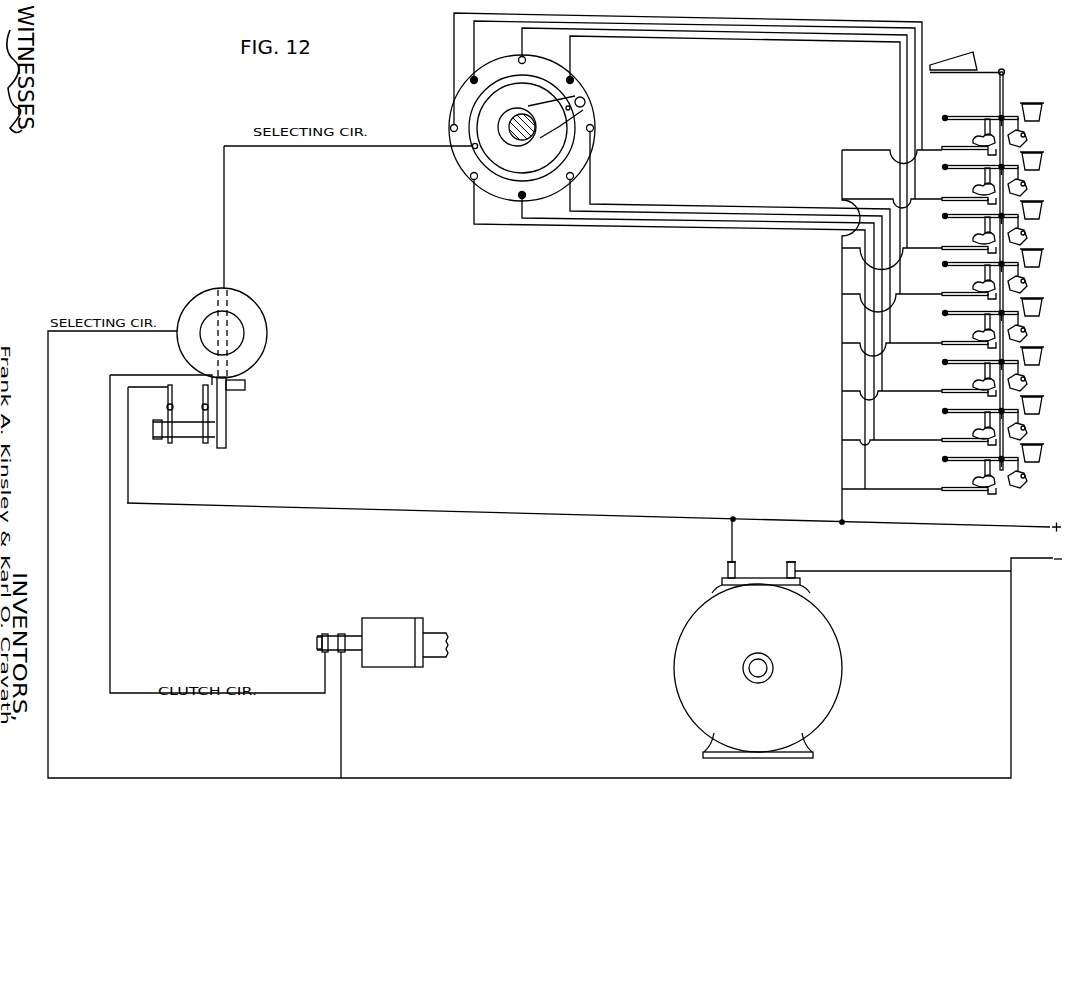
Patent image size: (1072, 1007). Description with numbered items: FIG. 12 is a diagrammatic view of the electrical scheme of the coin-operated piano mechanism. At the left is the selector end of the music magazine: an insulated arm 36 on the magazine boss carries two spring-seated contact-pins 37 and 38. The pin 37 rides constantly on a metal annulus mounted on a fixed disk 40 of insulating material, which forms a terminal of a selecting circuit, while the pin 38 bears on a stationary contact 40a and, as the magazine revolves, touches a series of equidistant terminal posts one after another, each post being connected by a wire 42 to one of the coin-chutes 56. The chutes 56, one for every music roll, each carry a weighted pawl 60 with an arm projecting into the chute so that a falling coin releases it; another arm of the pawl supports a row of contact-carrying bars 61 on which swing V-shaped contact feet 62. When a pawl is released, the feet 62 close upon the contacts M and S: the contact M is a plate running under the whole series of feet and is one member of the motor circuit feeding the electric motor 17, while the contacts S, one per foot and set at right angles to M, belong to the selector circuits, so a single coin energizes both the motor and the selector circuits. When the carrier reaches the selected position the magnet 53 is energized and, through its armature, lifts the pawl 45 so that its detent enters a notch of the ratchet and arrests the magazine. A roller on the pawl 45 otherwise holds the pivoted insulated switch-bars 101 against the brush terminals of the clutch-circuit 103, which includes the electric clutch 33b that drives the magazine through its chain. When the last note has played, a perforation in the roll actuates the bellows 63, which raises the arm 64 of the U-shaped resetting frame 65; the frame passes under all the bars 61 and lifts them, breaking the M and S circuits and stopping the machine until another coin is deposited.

The electric-motor 17 is at (758, 639).
The electric clutch 33b is at (382, 642).
The insulated arm 36 is at (555, 117).
The contact-pin 37 is at (577, 97).
The contact-pin 38 is at (588, 103).
The fixed disk 40 is at (582, 153).
The stationary contact 40a is at (598, 130).
The wire 42 is at (779, 43).
The pawl 45 is at (228, 413).
The magnet 53 is at (266, 327).
The coin-chutes 56 is at (1043, 104).
The pawl 60 is at (1027, 137).
The contact-carrying bars 61 is at (960, 117).
The contact feet 62 is at (977, 138).
The bellows 63 is at (961, 52).
The arm 64 is at (1005, 92).
The resetting frame 65 is at (999, 118).
The switch-bars 101 is at (206, 444).
The clutch-circuit 103 is at (140, 375).
The selector circuit contacts S is at (953, 150).
The motor circuit contact M is at (985, 169).